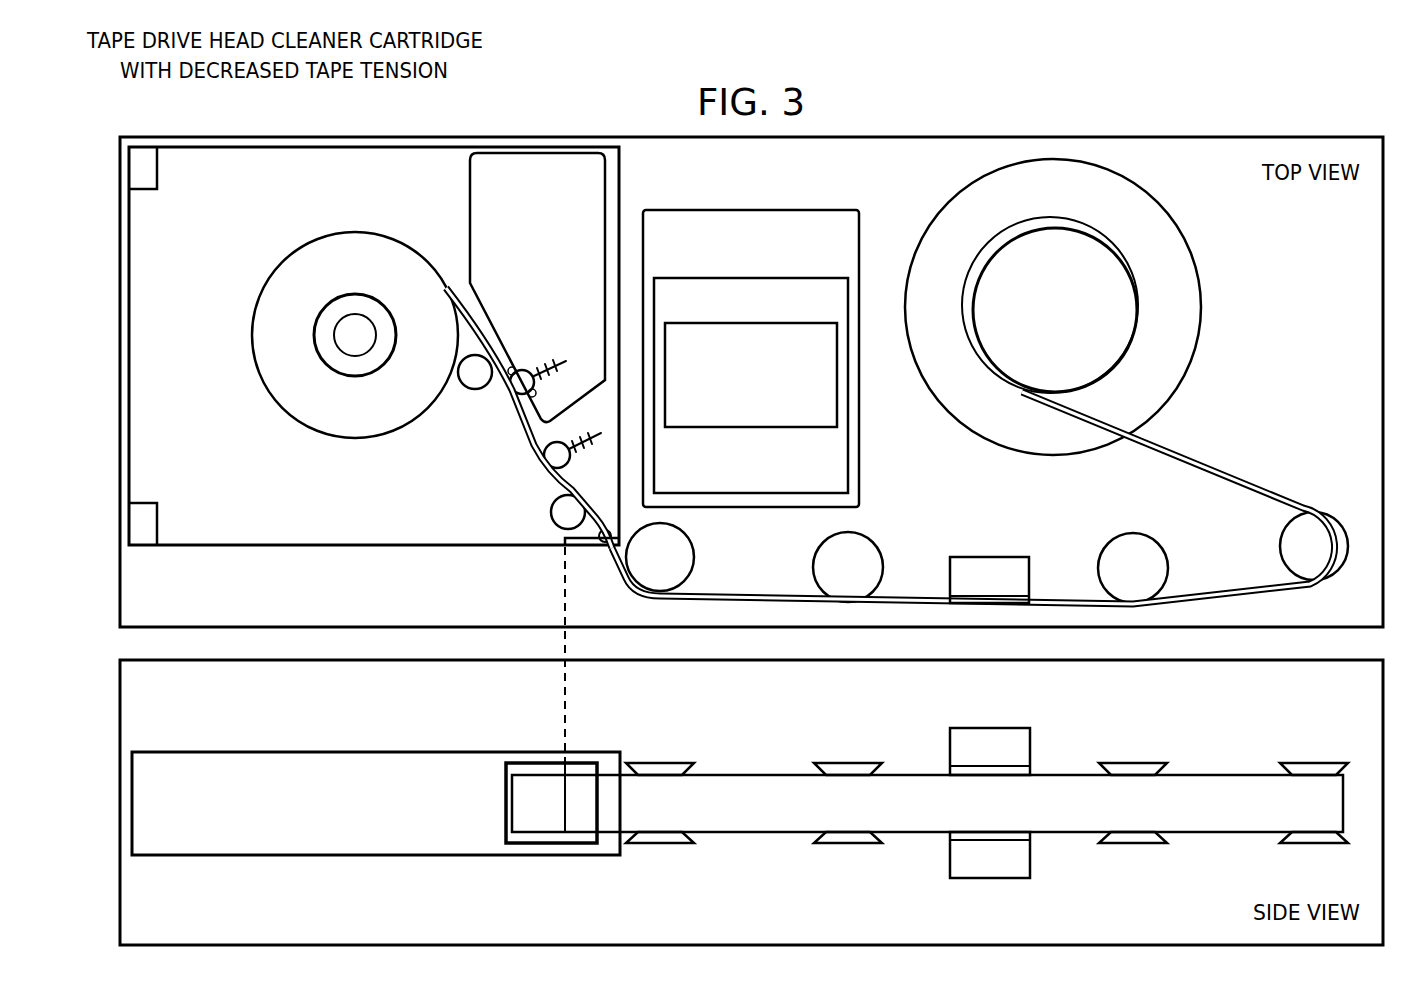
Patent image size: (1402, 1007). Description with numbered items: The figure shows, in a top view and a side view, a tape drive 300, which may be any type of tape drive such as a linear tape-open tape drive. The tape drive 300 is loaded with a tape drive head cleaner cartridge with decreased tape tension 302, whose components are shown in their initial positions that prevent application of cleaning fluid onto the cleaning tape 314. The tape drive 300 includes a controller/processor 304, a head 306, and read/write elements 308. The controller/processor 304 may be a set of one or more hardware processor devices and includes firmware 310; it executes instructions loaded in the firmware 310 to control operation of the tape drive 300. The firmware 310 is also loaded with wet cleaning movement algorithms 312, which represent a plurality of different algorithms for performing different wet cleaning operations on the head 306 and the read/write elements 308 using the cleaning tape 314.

The tape drive 300 is at (735, 750).
The tape drive head cleaner cartridge with decreased tape tension 302 is at (311, 143).
The controller/processor 304 is at (718, 208).
The head 306 is at (1031, 752).
The read/write elements 308 is at (912, 860).
The firmware 310 is at (850, 415).
The wet cleaning movement algorithms 312 is at (750, 430).
The cleaning tape 314 is at (1223, 783).